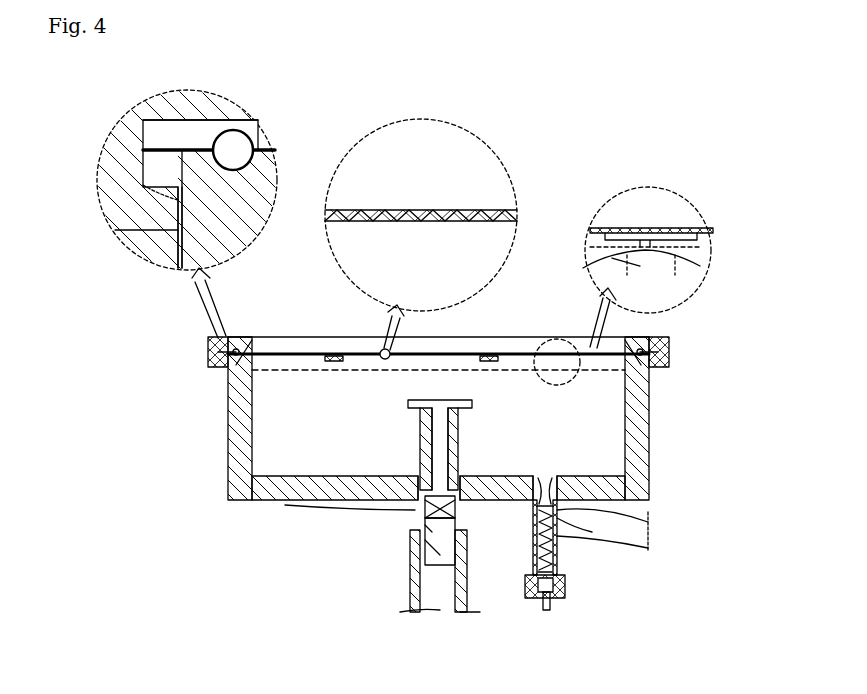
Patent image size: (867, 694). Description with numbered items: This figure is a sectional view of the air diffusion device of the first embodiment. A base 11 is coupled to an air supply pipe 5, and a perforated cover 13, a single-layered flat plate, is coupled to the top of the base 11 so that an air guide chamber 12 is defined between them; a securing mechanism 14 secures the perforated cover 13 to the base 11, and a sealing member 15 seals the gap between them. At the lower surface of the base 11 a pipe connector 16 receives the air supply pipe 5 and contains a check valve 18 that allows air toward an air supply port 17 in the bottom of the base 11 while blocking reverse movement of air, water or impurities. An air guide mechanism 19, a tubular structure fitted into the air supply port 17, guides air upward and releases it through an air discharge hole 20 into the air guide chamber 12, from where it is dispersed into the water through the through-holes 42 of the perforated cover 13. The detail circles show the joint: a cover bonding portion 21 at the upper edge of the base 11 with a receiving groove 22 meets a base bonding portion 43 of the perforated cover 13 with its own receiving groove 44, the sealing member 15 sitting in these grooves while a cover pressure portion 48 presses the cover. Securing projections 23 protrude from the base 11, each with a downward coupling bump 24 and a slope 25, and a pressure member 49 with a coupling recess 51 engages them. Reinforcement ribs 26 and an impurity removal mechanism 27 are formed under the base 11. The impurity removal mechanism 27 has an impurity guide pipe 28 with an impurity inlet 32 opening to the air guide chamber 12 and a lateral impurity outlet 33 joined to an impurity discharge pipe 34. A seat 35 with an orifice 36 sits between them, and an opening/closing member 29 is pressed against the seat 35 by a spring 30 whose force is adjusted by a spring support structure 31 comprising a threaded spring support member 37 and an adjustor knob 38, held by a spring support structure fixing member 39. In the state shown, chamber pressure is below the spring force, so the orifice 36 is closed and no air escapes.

The air supply pipe 5 is at (410, 590).
The base 11 is at (228, 440).
The air guide chamber 12 is at (283, 500).
The perforated cover 13 is at (313, 345).
The securing mechanism 14 is at (690, 342).
The sealing member 15 is at (270, 160).
The pipe connector 16 is at (408, 520).
The air supply port 17 is at (418, 472).
The check valve 18 is at (425, 545).
The air guide mechanism 19 is at (465, 430).
The air discharge hole 20 is at (455, 403).
The cover bonding portion 21 is at (140, 165).
The receiving groove 22 is at (258, 178).
The securing projection 23 is at (692, 228).
The coupling bump 24 is at (128, 218).
The slope 25 is at (713, 236).
The reinforcement rib 26 is at (352, 510).
The impurity removal mechanism 27 is at (580, 592).
The impurity guide pipe 28 is at (536, 538).
The opening/closing member 29 is at (533, 512).
The spring 30 is at (556, 566).
The spring support structure 31 is at (535, 615).
The impurity inlet 32 is at (535, 485).
The impurity outlet 33 is at (560, 530).
The impurity discharge pipe 34 is at (648, 535).
The seat 35 is at (558, 480).
The orifice 36 is at (546, 480).
The spring support member 37 is at (525, 585).
The adjustor knob 38 is at (547, 611).
The spring support structure fixing member 39 is at (565, 598).
The through-hole 42 is at (470, 210).
The base bonding portion 43 is at (180, 130).
The receiving groove 44 is at (250, 135).
The cover pressure portion 48 is at (262, 150).
The pressure member 49 is at (612, 253).
The coupling recess 51 is at (162, 245).